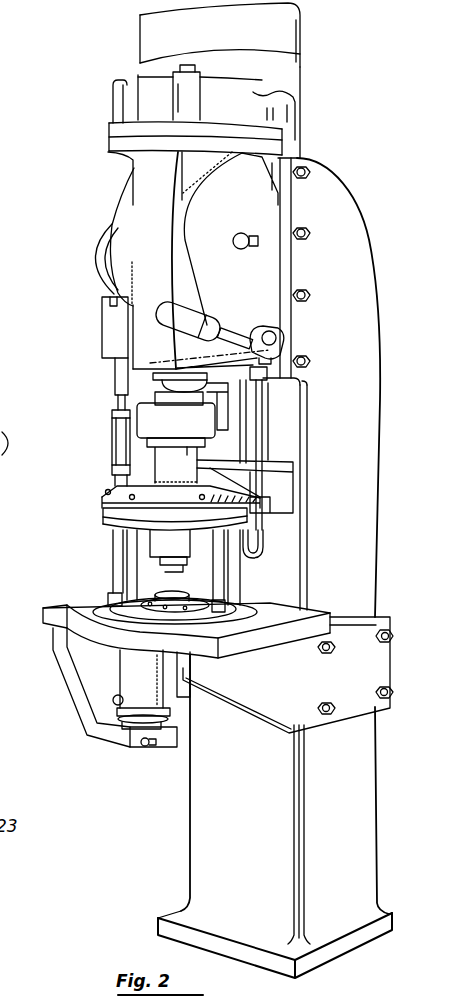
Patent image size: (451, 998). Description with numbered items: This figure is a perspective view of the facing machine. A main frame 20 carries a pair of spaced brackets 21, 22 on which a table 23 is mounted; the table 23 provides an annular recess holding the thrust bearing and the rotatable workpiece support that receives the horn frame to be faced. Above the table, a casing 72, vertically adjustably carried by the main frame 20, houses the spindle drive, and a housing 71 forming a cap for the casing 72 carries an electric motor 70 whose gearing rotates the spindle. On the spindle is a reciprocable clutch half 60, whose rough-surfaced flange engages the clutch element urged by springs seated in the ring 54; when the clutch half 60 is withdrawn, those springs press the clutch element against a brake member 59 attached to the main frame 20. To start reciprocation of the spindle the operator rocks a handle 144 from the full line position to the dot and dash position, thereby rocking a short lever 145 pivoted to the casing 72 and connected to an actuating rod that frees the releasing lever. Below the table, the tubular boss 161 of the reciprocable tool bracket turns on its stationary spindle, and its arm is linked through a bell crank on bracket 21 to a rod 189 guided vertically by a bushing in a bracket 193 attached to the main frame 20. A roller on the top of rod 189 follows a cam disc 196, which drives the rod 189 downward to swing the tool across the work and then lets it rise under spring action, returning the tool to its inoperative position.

The main frame 20 is at (208, 828).
The bracket 21 is at (87, 672).
The bracket 22 is at (258, 700).
The table 23 is at (75, 608).
The ring 54 is at (110, 520).
The brake member 59 is at (108, 502).
The reciprocable clutch half 60 is at (163, 463).
The electric motor 70 is at (150, 36).
The housing 71 is at (137, 95).
The casing 72 is at (145, 173).
The handle 144 is at (200, 312).
The short lever 145 is at (272, 338).
The tubular boss 161 is at (130, 680).
The rod 189 is at (118, 376).
The bracket 193 is at (110, 316).
The cam disc 196 is at (98, 258).